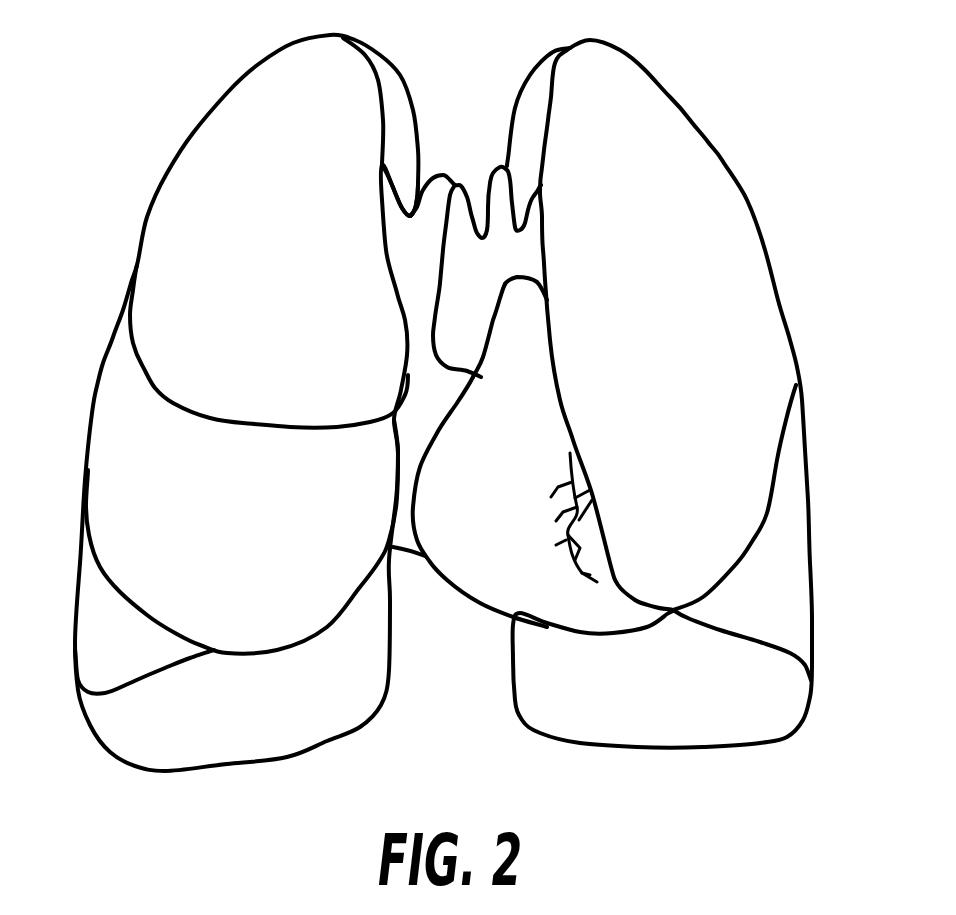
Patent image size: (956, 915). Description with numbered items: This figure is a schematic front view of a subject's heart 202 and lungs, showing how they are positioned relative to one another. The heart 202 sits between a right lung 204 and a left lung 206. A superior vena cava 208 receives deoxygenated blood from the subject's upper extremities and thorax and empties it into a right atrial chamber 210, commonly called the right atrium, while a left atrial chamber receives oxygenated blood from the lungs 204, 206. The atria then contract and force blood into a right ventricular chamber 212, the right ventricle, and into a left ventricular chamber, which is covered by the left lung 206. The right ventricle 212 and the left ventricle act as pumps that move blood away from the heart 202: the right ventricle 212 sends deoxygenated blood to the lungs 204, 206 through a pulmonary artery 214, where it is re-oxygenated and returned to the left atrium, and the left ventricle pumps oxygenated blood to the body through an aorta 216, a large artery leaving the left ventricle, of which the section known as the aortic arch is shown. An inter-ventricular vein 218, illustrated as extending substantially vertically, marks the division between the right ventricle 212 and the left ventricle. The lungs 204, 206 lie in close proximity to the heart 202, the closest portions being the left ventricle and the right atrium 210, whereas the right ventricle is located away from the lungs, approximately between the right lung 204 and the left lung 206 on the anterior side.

The heart 202 is at (430, 628).
The right lung 204 is at (277, 70).
The left lung 206 is at (683, 140).
The superior vena cava 208 is at (393, 207).
The right atrial chamber 210 is at (410, 423).
The right ventricular chamber 212 is at (493, 578).
The pulmonary artery 214 is at (537, 312).
The aorta 216 is at (467, 217).
The inter-ventricular vein 218 is at (572, 565).